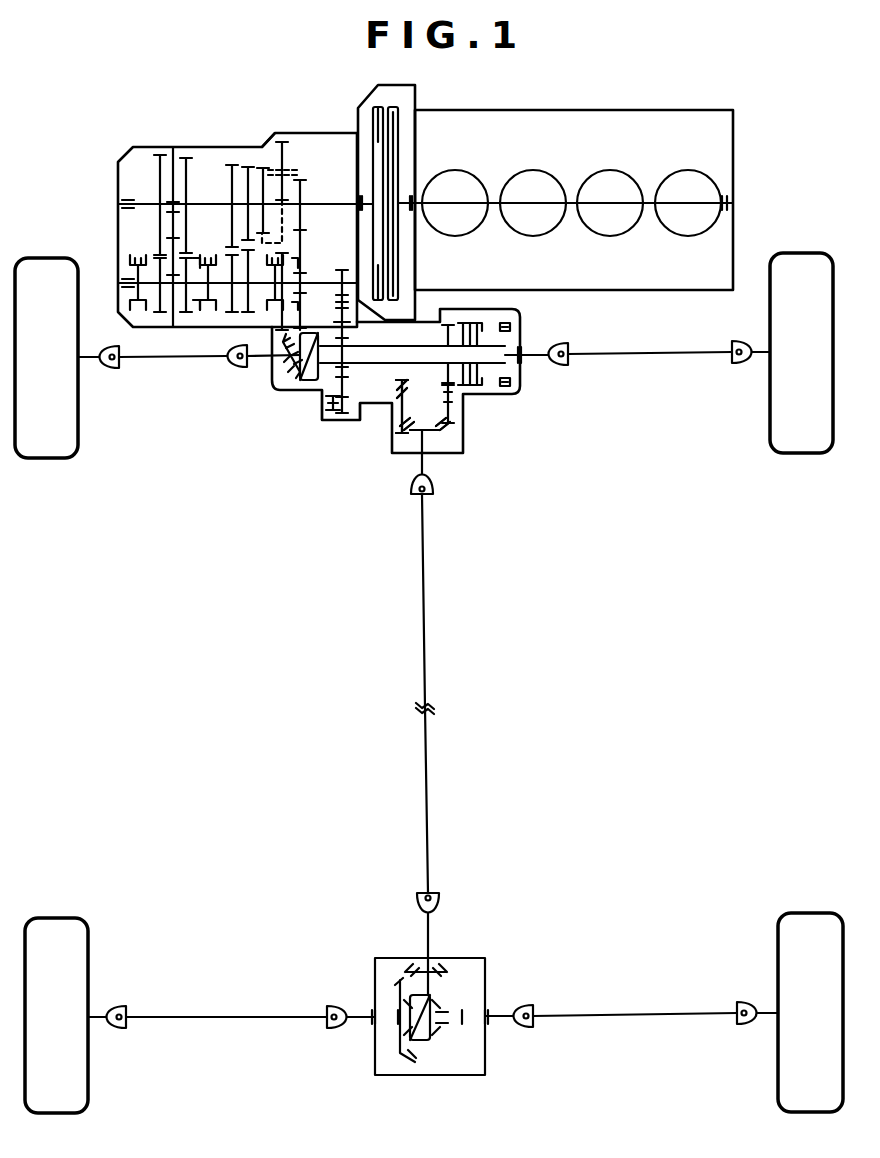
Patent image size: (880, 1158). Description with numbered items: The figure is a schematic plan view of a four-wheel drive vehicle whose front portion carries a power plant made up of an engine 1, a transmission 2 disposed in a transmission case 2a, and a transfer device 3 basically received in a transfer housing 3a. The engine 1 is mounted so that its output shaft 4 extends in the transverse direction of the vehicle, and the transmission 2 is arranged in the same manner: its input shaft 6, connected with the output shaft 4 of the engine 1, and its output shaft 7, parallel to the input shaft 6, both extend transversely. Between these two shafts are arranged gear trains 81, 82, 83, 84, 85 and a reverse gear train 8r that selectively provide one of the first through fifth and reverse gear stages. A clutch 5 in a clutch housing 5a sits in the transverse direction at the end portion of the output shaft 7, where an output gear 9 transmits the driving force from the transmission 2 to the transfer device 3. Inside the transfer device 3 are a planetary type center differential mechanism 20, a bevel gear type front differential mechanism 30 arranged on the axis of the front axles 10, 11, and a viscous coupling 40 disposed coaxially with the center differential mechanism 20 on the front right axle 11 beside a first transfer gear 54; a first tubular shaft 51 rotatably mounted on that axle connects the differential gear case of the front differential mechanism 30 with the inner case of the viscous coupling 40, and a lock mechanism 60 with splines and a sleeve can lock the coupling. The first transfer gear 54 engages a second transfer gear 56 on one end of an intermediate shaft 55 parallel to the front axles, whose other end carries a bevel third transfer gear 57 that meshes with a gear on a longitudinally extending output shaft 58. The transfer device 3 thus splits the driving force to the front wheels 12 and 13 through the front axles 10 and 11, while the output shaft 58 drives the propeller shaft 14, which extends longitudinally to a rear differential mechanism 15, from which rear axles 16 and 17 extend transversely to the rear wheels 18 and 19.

The engine 1 is at (670, 105).
The transmission 2 is at (126, 158).
The transmission case 2a is at (329, 126).
The transfer device 3 is at (386, 438).
The transfer housing 3a is at (503, 400).
The output shaft 4 is at (493, 201).
The clutch 5 is at (398, 160).
The clutch housing 5a is at (400, 84).
The input shaft 6 is at (328, 204).
The output shaft 7 is at (320, 283).
The gear train 81 is at (303, 173).
The gear train 82 is at (248, 152).
The gear train 83 is at (231, 150).
The gear train 84 is at (186, 142).
The gear train 85 is at (160, 138).
The reverse gear train 8r is at (263, 154).
The output gear 9 is at (342, 264).
The front axle 10 is at (243, 370).
The front right axle 11 is at (562, 368).
The front wheel 12 is at (66, 424).
The front wheel 13 is at (787, 420).
The propeller shaft 14 is at (423, 602).
The rear differential mechanism 15 is at (466, 958).
The rear axle 16 is at (340, 1032).
The rear axle 17 is at (522, 1032).
The rear wheel 18 is at (80, 1100).
The rear wheel 19 is at (794, 1068).
The center differential mechanism 20 is at (328, 412).
The front differential mechanism 30 is at (276, 347).
The viscous coupling 40 is at (484, 320).
The first tubular shaft 51 is at (276, 398).
The first transfer gear 54 is at (450, 332).
The intermediate shaft 55 is at (430, 412).
The second transfer gear 56 is at (466, 426).
The third transfer gear 57 is at (396, 392).
The output shaft 58 is at (410, 472).
The lock mechanism 60 is at (528, 392).